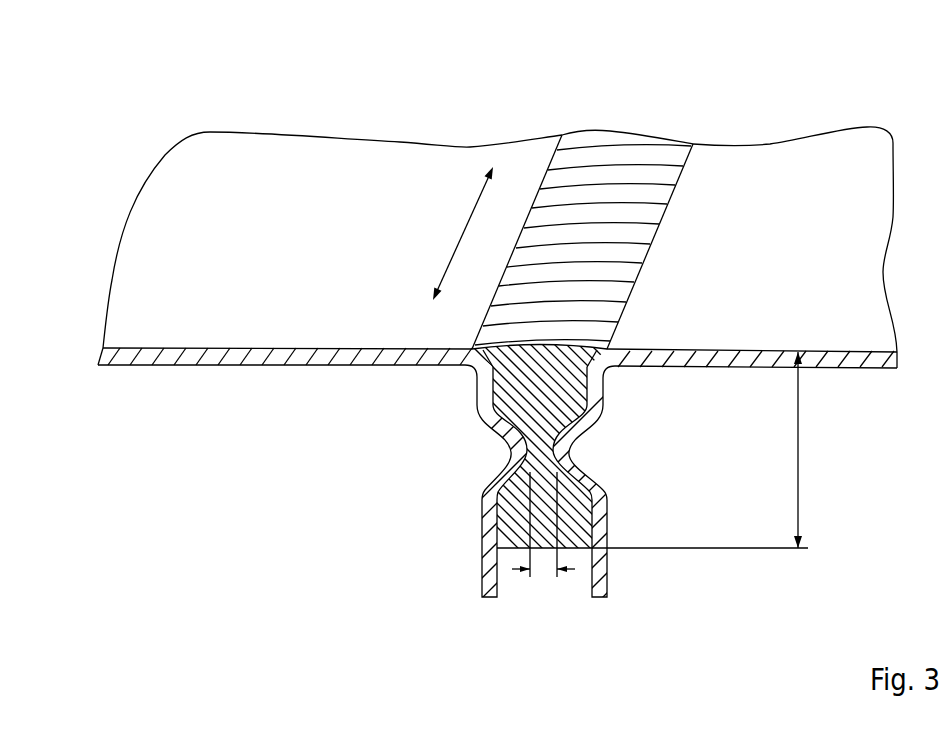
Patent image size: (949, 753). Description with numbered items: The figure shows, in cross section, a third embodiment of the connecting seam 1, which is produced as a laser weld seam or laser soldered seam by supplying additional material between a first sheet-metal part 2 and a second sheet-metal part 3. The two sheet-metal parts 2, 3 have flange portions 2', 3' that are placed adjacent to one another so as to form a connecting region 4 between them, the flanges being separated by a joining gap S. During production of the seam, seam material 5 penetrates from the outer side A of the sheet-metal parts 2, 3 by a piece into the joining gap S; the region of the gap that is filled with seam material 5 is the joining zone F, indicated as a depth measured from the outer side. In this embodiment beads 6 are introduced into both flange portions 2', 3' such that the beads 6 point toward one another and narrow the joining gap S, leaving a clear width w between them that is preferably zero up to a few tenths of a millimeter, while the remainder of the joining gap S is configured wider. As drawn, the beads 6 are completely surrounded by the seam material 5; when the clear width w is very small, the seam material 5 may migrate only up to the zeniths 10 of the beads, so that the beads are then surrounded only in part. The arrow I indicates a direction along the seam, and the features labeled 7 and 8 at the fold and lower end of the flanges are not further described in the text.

The connecting seam 1 is at (592, 155).
The first sheet-metal part 2 is at (330, 206).
The second sheet-metal part 3 is at (752, 202).
The outer side A is at (368, 165).
The welding direction I is at (462, 233).
The connecting region 4 is at (590, 504).
The seam material 5 is at (528, 392).
The beads 6 is at (508, 512).
The bead / bulge 7 is at (510, 457).
The lower end of flange 8 is at (590, 580).
The zeniths 10 is at (522, 428).
The flange portion of the first sheet-metal part 2' is at (560, 481).
The flange portion of the second sheet-metal part 3' is at (640, 481).
The joining gap S is at (516, 583).
The clear width w is at (543, 570).
The joining zone F is at (800, 463).